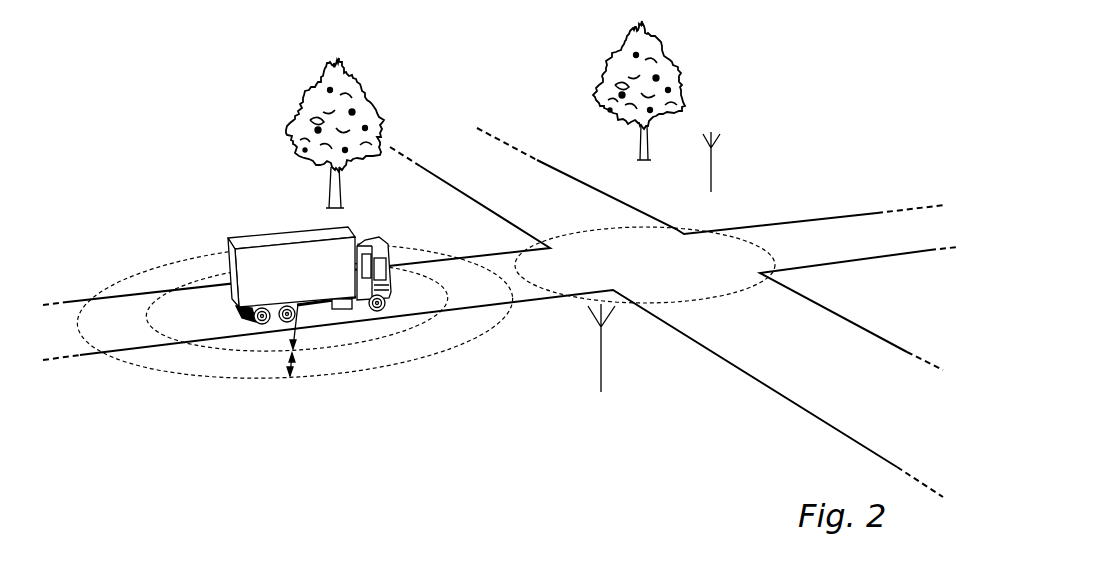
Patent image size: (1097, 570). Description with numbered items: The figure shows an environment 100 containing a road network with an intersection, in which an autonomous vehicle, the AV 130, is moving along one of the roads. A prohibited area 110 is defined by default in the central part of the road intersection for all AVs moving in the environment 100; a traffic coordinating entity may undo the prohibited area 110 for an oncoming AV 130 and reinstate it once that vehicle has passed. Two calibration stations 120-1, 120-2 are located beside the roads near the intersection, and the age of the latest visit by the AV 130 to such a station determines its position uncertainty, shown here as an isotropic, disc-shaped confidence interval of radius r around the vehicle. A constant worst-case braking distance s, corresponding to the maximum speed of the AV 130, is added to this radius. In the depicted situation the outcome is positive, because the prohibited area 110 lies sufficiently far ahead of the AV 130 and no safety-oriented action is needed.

The environment 100 is at (853, 248).
The prohibited area 110 is at (667, 269).
The calibration station 120-1 is at (712, 160).
The calibration station 120-2 is at (598, 364).
The autonomous vehicle 130 is at (257, 232).